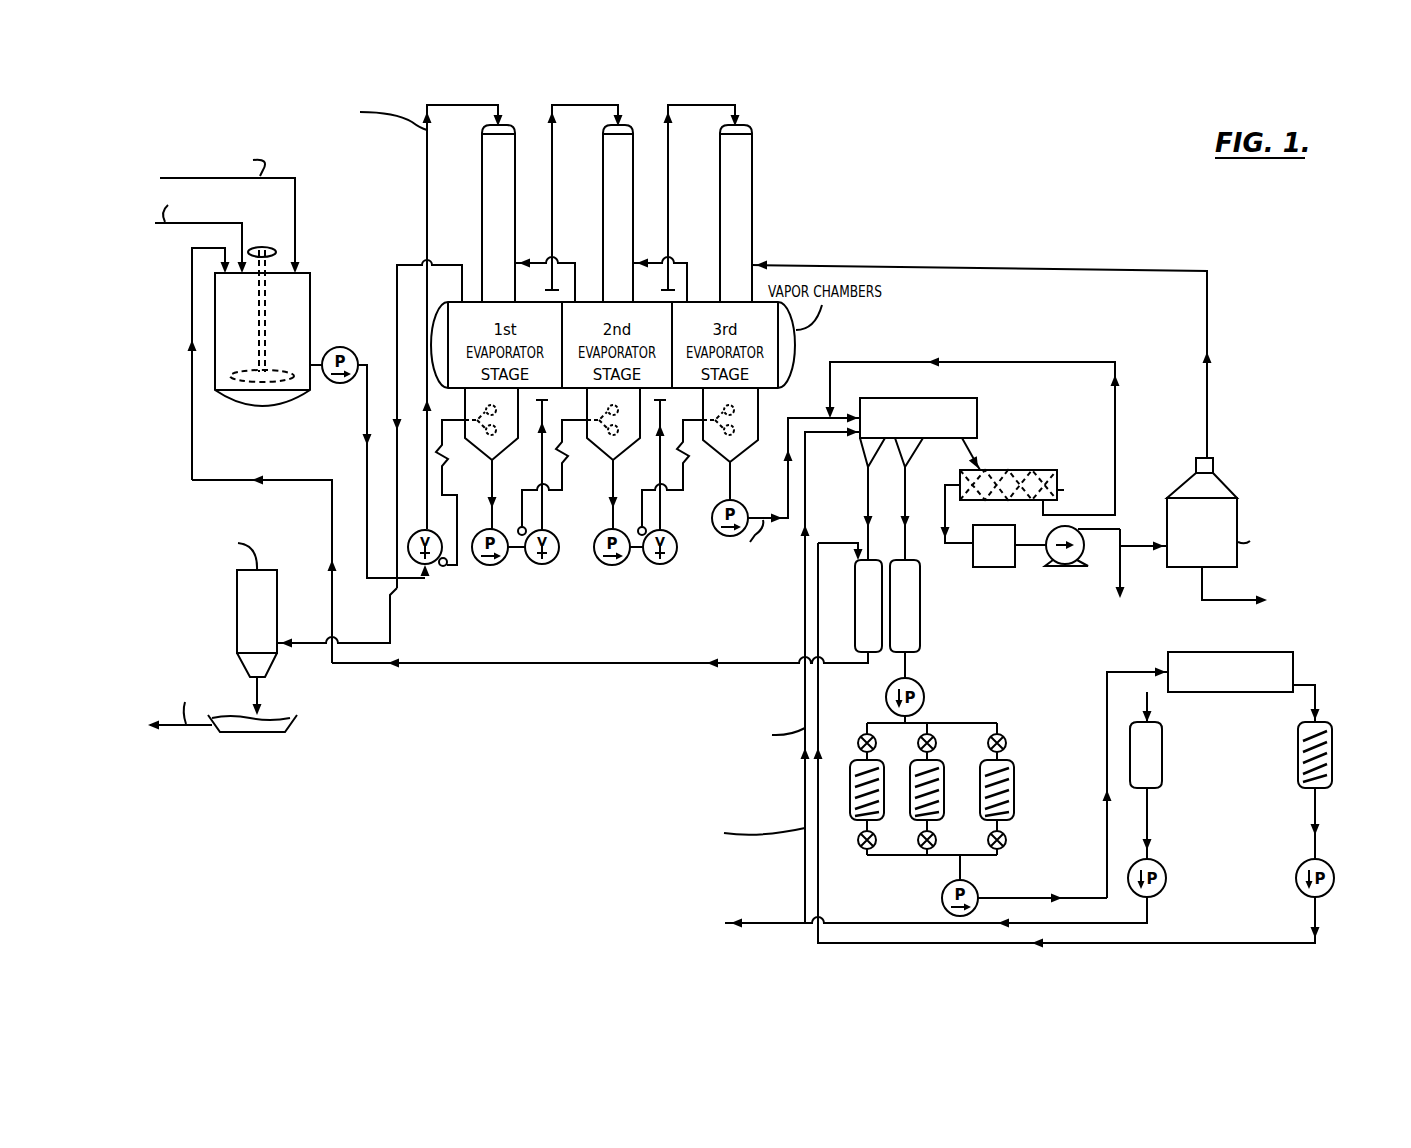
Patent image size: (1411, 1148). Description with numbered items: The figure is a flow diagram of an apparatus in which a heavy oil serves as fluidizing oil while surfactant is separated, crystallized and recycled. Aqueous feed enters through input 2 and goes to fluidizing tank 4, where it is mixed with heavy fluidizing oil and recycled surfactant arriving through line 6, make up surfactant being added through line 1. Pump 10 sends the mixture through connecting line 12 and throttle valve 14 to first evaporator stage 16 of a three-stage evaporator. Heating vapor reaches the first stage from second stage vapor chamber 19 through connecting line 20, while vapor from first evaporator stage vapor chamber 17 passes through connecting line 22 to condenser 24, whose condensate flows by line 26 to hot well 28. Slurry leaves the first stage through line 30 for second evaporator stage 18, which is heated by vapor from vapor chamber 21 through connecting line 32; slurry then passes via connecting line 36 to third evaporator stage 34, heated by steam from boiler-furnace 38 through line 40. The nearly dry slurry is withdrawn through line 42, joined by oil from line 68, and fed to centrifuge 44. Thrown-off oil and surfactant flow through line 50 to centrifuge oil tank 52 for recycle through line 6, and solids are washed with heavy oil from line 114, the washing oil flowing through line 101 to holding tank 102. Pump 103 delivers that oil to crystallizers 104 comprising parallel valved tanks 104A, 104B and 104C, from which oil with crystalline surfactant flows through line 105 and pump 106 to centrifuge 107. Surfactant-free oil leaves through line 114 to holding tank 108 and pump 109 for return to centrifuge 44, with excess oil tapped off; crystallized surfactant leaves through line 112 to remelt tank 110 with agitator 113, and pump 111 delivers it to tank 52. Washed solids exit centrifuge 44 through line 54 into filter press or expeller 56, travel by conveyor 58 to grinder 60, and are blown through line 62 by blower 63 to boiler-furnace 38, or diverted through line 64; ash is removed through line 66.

The make up surfactant line 1 is at (224, 204).
The input 2 is at (194, 229).
The fluidizing tank 4 is at (310, 285).
The oil and surfactant supply line 6 is at (192, 386).
The pump 10 is at (340, 384).
The connecting line 12 is at (450, 113).
The throttle valve 14 is at (437, 530).
The first evaporator stage 16 is at (482, 192).
The first evaporator stage vapor chamber 17 is at (465, 388).
The second evaporator stage 18 is at (603, 192).
The second stage vapor chamber 19 is at (586, 390).
The connecting line 20 is at (530, 268).
The vapor chamber 21 is at (701, 390).
The connecting line 22 is at (397, 301).
The condenser 24 is at (237, 604).
The line 26 is at (258, 700).
The hot well 28 is at (290, 720).
The line 30 is at (592, 113).
The connecting line 32 is at (652, 268).
The third evaporator stage 34 is at (720, 192).
The connecting line 36 is at (705, 113).
The boiler-furnace 38 is at (1226, 488).
The line 40 is at (1207, 392).
The line 42 is at (788, 482).
The centrifuge 44 is at (978, 410).
The line 50 is at (868, 500).
The centrifuge oil tank 52 is at (859, 620).
The line 54 is at (974, 455).
The filter press or expeller 56 is at (1025, 470).
The line or conveyor 58 is at (951, 535).
The grinder 60 is at (986, 558).
The line 62 is at (1124, 532).
The blower 63 is at (1050, 537).
The line 64 is at (1118, 583).
The line 66 is at (1194, 600).
The line 68 is at (1115, 416).
The line 101 is at (906, 500).
The holding tank 102 is at (893, 620).
The pump 103 is at (886, 697).
The crystallizers 104 is at (960, 723).
The valved tank 104A is at (870, 822).
The valved tank 104B is at (930, 822).
The valved tank 104C is at (1002, 826).
The line 105 is at (960, 868).
The pump 106 is at (975, 890).
The centrifuge 107 is at (1295, 665).
The holding tank 108 is at (1163, 755).
The pump 109 is at (1166, 880).
The remelt tank 110 is at (1334, 755).
The pump 111 is at (1333, 880).
The line 112 is at (818, 710).
The agitator 113 is at (1332, 722).
The line 114 is at (805, 630).